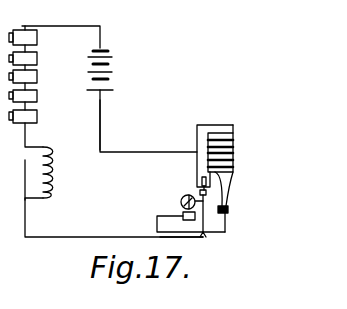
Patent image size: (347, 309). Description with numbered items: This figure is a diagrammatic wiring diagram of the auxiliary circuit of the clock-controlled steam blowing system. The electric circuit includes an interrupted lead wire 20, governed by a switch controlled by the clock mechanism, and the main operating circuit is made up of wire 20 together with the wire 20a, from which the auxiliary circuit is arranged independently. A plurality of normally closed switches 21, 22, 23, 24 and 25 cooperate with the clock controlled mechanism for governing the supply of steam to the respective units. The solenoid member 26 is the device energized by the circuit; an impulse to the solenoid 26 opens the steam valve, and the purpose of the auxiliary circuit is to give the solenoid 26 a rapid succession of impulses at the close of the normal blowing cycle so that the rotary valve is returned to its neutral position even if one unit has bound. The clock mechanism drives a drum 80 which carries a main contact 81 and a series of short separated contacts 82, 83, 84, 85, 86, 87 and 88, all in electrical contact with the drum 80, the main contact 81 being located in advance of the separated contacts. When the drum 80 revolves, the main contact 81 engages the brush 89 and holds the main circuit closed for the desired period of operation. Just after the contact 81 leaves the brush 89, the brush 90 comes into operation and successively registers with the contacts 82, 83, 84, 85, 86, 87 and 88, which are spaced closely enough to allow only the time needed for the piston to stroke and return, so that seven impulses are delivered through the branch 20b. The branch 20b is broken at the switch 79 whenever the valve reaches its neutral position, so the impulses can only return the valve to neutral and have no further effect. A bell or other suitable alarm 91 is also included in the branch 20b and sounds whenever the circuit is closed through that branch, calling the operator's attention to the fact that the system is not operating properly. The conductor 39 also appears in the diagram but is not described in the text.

The interrupted lead wire 20 is at (101, 135).
The main operating circuit wire 20a is at (181, 240).
The branch circuit 20b is at (210, 243).
The normally closed switch 21 is at (37, 118).
The normally closed switch 22 is at (33, 95).
The normally closed switch 23 is at (37, 77).
The normally closed switch 24 is at (33, 57).
The normally closed switch 25 is at (34, 37).
The solenoid member 26 is at (54, 190).
The conductor 39 is at (12, 180).
The switch 79 is at (182, 201).
The drum 80 is at (197, 135).
The main contact 81 is at (201, 177).
The short separated contact 82 is at (213, 209).
The short separated contact 83 is at (229, 192).
The short separated contact 84 is at (233, 165).
The short separated contact 85 is at (233, 152).
The short separated contact 86 is at (233, 141).
The short separated contact 87 is at (236, 122).
The short separated contact 88 is at (213, 147).
The brush 89 is at (186, 211).
The brush 90 is at (229, 212).
The bell or alarm 91 is at (185, 192).